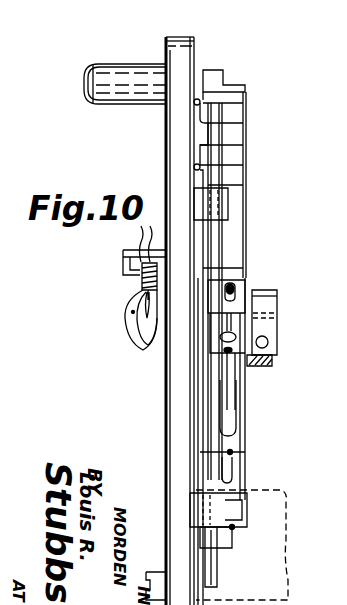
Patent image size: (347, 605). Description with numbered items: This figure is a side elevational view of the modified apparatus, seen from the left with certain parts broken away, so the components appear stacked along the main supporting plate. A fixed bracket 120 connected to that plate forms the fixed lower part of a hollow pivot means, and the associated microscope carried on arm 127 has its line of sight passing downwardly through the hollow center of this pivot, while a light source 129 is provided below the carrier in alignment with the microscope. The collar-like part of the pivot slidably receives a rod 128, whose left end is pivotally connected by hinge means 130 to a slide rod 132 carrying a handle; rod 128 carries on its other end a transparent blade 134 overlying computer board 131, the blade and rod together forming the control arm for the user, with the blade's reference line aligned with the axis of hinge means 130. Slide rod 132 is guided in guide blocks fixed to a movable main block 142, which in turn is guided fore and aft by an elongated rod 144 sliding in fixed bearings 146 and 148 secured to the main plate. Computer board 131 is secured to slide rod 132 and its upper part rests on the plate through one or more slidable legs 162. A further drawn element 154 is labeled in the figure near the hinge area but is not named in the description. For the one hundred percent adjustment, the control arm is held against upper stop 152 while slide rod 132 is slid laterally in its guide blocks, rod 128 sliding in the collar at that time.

The fixed bracket 120 is at (248, 284).
The arm 127 is at (294, 579).
The rod 128 is at (268, 345).
The light source 129 is at (148, 350).
The hinge means 130 is at (276, 316).
The computer board 131 is at (248, 200).
The slide rod 132 is at (236, 405).
The transparent blade 134 is at (266, 364).
The movable main block 142 is at (200, 395).
The elongated rod 144 is at (216, 565).
The fixed bearing 146 is at (196, 510).
The fixed bearing 148 is at (196, 201).
The upper stop 152 is at (247, 57).
The screw 154 is at (236, 338).
The slidable leg 162 is at (234, 113).